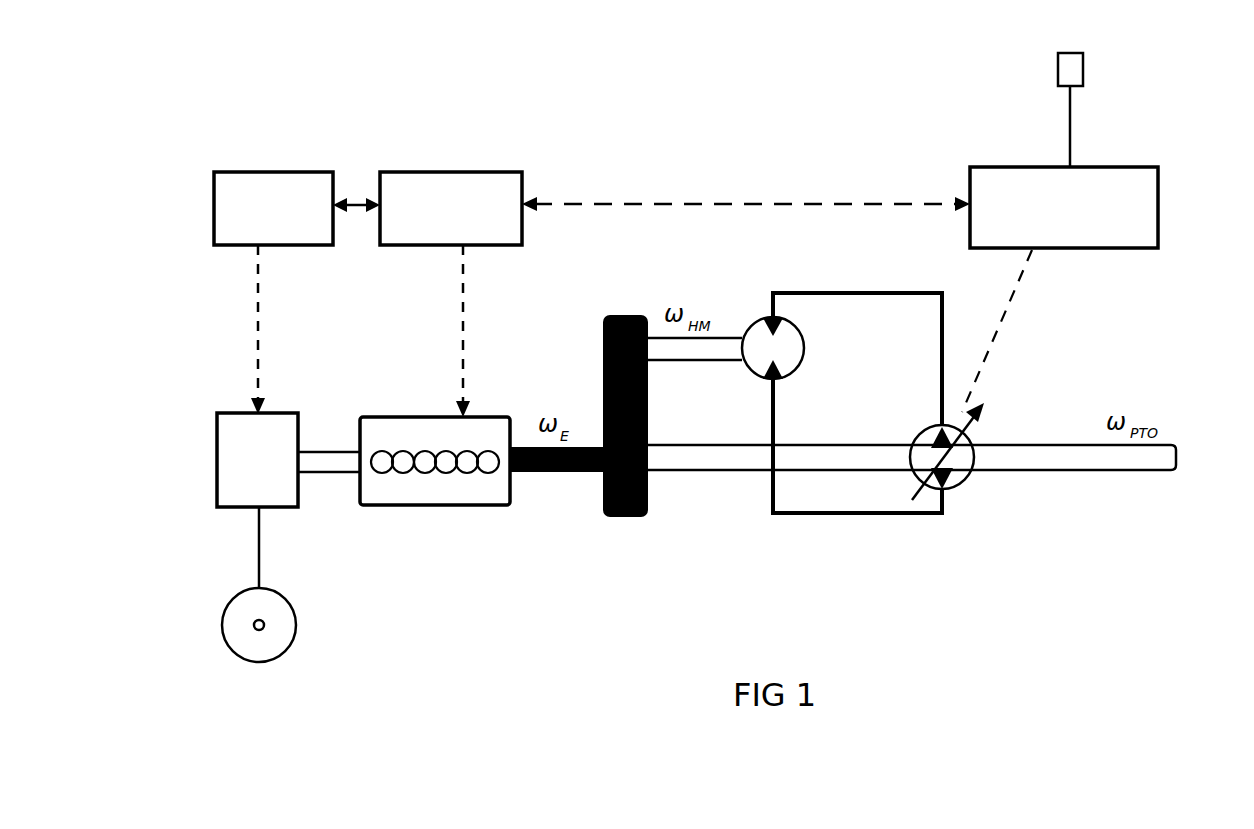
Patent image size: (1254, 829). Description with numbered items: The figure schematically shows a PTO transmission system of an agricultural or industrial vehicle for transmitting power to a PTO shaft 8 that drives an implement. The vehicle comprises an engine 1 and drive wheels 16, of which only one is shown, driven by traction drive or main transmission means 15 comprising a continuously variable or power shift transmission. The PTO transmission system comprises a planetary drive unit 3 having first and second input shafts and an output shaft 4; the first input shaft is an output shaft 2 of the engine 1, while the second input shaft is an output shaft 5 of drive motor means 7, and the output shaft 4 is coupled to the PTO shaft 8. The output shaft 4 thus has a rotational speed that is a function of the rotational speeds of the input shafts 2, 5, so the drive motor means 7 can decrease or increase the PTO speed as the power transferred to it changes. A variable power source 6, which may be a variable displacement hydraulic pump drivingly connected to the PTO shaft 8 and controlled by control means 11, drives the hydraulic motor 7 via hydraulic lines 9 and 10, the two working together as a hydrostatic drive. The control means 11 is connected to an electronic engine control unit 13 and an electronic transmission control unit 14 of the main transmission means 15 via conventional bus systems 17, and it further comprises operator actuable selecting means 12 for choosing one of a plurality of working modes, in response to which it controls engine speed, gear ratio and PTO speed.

The engine 1 is at (477, 505).
The output shaft of the engine 2 is at (562, 472).
The planetary drive unit 3 is at (627, 517).
The output shaft 4 is at (720, 470).
The output shaft of drive motor means 5 is at (723, 335).
The variable power source 6 is at (957, 493).
The drive motor means 7 is at (803, 356).
The PTO shaft 8 is at (1088, 470).
The hydraulic line 9 is at (858, 513).
The hydraulic line 10 is at (820, 292).
The control means 11 is at (1158, 203).
The operator actuable selecting means 12 is at (1085, 65).
The electronic engine control unit 13 is at (430, 172).
The electronic transmission control unit 14 is at (283, 172).
The main transmission means 15 is at (217, 482).
The drive wheels 16 is at (297, 640).
The bus systems 17 is at (359, 205).